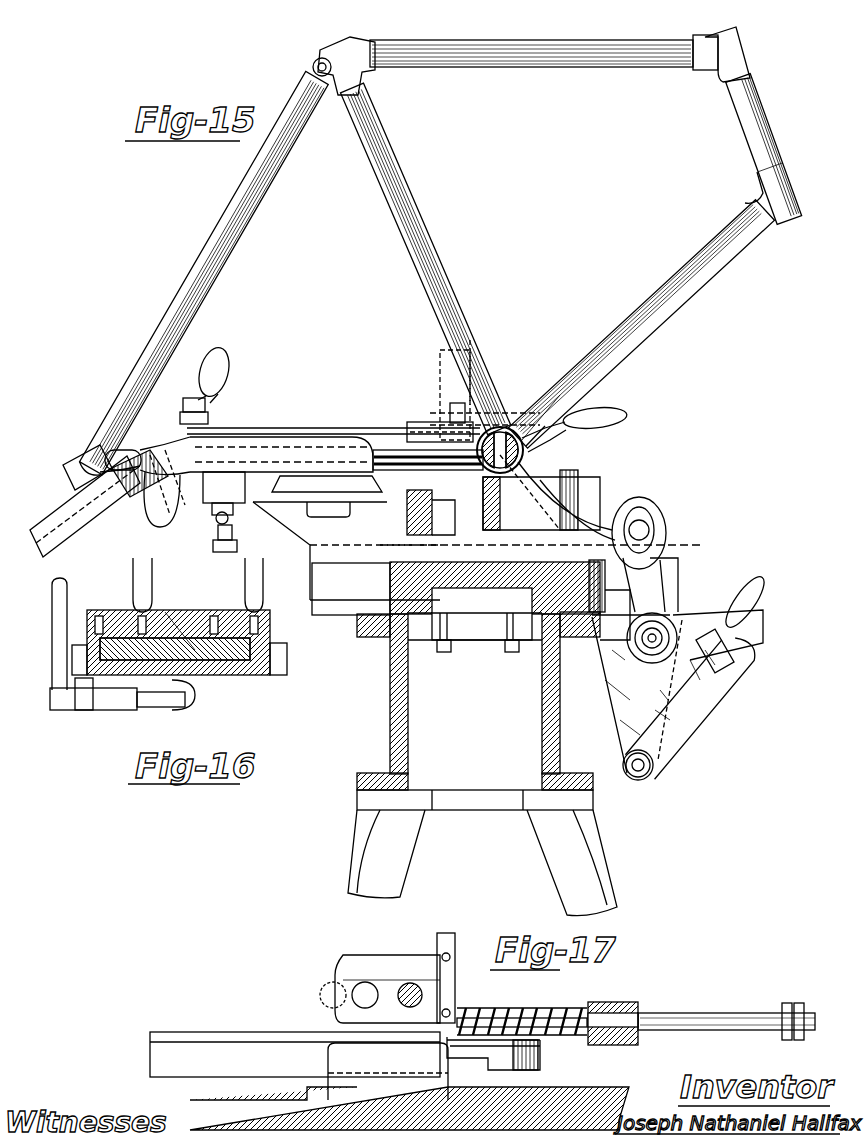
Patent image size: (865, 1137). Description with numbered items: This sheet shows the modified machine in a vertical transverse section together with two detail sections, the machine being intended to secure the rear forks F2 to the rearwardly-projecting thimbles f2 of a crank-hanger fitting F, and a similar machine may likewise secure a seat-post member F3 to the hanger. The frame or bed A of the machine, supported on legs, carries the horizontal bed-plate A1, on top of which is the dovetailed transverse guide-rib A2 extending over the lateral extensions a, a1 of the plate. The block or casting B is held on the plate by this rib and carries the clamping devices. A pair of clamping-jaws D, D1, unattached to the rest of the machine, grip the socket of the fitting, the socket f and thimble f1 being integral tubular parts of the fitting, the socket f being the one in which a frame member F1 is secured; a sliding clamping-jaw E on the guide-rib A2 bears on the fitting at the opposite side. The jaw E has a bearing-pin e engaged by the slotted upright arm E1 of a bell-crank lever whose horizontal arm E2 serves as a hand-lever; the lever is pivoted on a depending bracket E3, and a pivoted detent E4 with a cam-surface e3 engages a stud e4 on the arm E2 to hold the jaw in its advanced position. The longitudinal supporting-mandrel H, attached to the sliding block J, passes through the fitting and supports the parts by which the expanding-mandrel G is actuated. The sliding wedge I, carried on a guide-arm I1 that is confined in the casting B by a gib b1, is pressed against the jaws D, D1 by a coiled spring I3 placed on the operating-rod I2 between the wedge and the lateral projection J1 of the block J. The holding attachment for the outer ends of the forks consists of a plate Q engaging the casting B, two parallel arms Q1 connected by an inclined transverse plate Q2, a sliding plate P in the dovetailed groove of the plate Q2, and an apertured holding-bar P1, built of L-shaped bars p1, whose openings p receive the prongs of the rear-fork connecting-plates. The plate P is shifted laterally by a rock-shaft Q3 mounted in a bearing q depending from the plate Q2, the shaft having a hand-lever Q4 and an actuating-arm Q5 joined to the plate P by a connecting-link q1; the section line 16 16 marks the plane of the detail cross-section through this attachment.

In FIG. 15, the fitting F is at (600, 425).
In FIG. 15, the frame member F1 is at (648, 340).
In FIG. 15, the rear forks F2 is at (428, 426).
In FIG. 15, the seat-post member F3 is at (455, 300).
In FIG. 15, the supporting-mandrel H is at (524, 455).
In FIG. 15, the expanding-mandrel G is at (440, 420).
In FIG. 15, the socket f is at (528, 438).
In FIG. 15, the thimble f1 is at (534, 406).
In FIG. 17, the rearwardly-projecting thimbles f2 is at (362, 985).
In FIG. 15, the clamping-jaw D is at (540, 515).
In FIG. 17, the clamping-jaw D is at (325, 1018).
In FIG. 15, the clamping-jaw D1 is at (470, 400).
In FIG. 17, the clamping-jaw D1 is at (422, 975).
In FIG. 15, the plate Q is at (312, 470).
In FIG. 15, the parallel arms Q1 is at (240, 445).
In FIG. 15, the transverse plate Q2 is at (114, 520).
In FIG. 16, the transverse plate Q2 is at (252, 678).
In FIG. 16, the rock-shaft Q3 is at (110, 712).
In FIG. 15, the hand-lever Q4 is at (235, 362).
In FIG. 16, the hand-lever Q4 is at (52, 628).
In FIG. 15, the actuating-arm Q5 is at (212, 512).
In FIG. 16, the actuating-arm Q5 is at (181, 706).
In FIG. 16, the bearing q is at (85, 712).
In FIG. 15, the connecting-link q1 is at (164, 460).
In FIG. 16, the transverse openings p is at (283, 620).
In FIG. 15, the L-shaped bars p1 is at (72, 488).
In FIG. 16, the sliding plate P is at (205, 680).
In FIG. 16, the apertured holding-bar P1 is at (185, 614).
In FIG. 15, the section line 16 is at (75, 478).
In FIG. 15, the casting B is at (346, 551).
In FIG. 17, the casting B is at (388, 1071).
In FIG. 15, the gib b1 is at (420, 545).
In FIG. 15, the lateral extension a is at (456, 601).
In FIG. 15, the lateral extension a1 is at (609, 600).
In FIG. 15, the frame A is at (482, 764).
In FIG. 17, the bed-plate A1 is at (545, 1085).
In FIG. 15, the guide-rib A2 is at (680, 567).
In FIG. 17, the sliding wedge I is at (348, 955).
In FIG. 15, the guide-arm I1 is at (408, 513).
In FIG. 17, the guide-arm I1 is at (198, 1035).
In FIG. 17, the operating-rod I2 is at (688, 1012).
In FIG. 17, the coiled spring I3 is at (488, 1010).
In FIG. 15, the sliding block J is at (520, 482).
In FIG. 17, the lateral projection J1 is at (608, 1000).
In FIG. 15, the sliding clamping-jaw E is at (505, 497).
In FIG. 15, the upright arm E1 is at (650, 585).
In FIG. 15, the horizontal arm E2 is at (765, 628).
In FIG. 15, the depending bracket E3 is at (653, 697).
In FIG. 15, the pivoted detent E4 is at (700, 720).
In FIG. 15, the bearing-pin e is at (650, 530).
In FIG. 15, the cam-surface e3 is at (735, 655).
In FIG. 15, the stud e4 is at (748, 632).